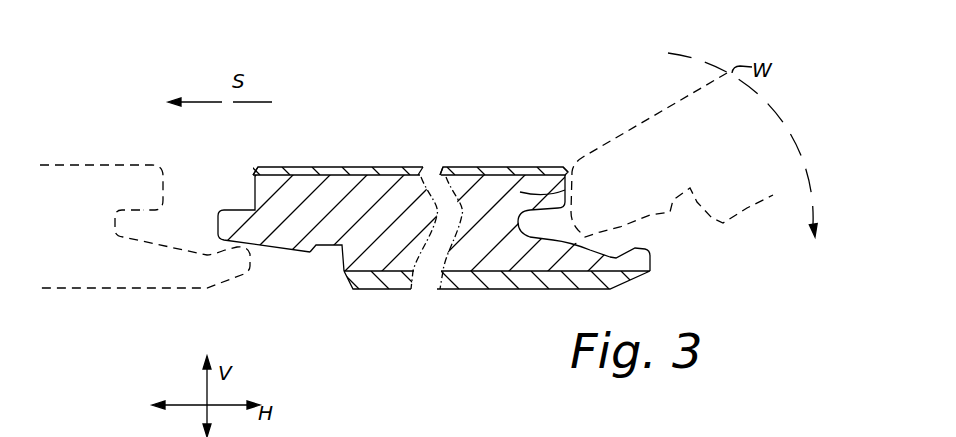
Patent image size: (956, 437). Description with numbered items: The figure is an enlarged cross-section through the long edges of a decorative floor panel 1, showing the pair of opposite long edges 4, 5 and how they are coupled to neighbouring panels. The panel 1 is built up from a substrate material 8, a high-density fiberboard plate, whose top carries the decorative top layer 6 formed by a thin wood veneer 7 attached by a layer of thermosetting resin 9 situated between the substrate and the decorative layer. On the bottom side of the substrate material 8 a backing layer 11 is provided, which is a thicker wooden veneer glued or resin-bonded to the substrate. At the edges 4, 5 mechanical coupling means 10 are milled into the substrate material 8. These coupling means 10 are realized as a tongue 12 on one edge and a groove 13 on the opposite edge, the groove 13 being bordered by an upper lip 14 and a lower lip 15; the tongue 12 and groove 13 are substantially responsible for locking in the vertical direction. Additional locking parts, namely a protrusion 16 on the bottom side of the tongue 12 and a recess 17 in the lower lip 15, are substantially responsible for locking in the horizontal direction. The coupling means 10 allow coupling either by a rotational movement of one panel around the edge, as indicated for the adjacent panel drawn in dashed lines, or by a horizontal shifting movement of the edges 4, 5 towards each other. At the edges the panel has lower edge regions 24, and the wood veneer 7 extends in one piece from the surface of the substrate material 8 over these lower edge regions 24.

The floor panel 1 is at (390, 327).
The long edge 4 is at (210, 205).
The long edge 5 is at (716, 193).
The decorative top layer 6 is at (292, 167).
The wood veneer 7 is at (348, 167).
The substrate material 8 is at (493, 244).
The layer of thermosetting resin 9 is at (483, 167).
The mechanical coupling means 10 is at (238, 291).
The backing layer 11 is at (455, 240).
The tongue 12 is at (263, 233).
The groove 13 is at (537, 225).
The upper lip 14 is at (586, 212).
The lower lip 15 is at (572, 265).
The protrusion 16 is at (300, 258).
The recess 17 is at (618, 253).
The lower edge region 24 is at (253, 175).